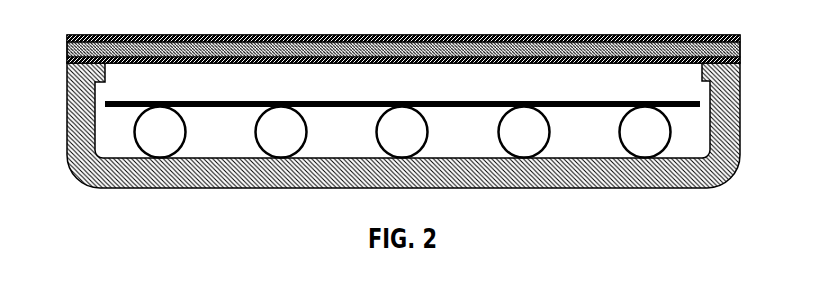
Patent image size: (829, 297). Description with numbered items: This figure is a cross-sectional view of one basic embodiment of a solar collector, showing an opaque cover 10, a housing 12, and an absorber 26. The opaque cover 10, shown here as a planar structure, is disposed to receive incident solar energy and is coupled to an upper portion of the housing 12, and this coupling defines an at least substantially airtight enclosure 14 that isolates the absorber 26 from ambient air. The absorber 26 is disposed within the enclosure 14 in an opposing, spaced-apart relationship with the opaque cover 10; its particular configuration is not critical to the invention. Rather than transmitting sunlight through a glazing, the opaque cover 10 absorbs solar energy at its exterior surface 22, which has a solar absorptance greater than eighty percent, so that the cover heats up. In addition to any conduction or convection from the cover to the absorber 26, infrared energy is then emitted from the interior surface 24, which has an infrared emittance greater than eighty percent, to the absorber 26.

The opaque cover 10 is at (57, 35).
The housing 12 is at (82, 178).
The enclosure 14 is at (469, 90).
The exterior surface 22 is at (562, 33).
The interior surface 24 is at (607, 63).
The absorber 26 is at (134, 136).